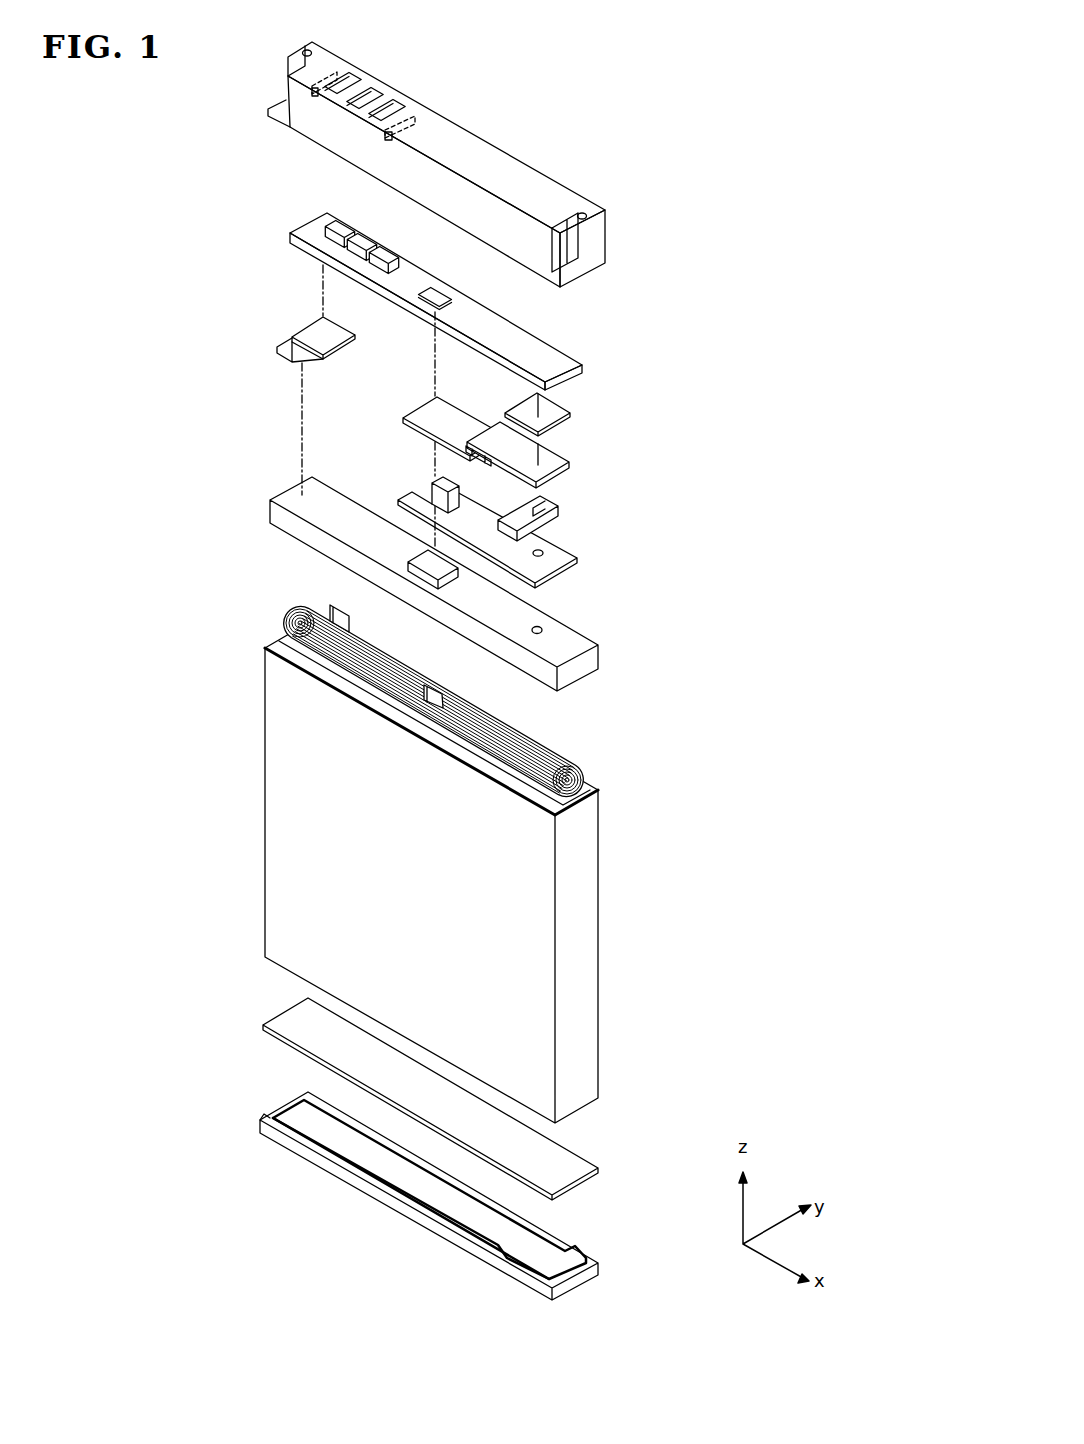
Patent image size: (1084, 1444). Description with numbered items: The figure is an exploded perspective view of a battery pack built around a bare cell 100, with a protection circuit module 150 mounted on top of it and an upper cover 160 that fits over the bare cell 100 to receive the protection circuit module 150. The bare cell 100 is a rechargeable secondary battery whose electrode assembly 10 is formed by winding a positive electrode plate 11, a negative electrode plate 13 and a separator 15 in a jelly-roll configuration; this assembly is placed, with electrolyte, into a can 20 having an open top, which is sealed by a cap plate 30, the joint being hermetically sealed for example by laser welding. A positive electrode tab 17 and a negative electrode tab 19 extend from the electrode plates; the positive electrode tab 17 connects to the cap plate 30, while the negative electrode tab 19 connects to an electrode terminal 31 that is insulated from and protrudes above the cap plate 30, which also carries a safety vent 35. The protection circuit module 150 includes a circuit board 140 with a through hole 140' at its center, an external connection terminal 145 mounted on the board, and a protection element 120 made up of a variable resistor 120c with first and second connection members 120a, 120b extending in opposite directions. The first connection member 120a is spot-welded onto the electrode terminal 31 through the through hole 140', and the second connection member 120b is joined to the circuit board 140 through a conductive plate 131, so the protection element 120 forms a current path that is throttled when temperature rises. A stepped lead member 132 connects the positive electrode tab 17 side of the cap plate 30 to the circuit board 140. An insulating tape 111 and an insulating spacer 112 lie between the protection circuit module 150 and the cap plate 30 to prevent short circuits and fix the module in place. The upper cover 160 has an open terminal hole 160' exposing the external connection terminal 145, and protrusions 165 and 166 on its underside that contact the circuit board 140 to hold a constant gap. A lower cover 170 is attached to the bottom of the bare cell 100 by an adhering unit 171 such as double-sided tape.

The bare cell 100 is at (493, 652).
The upper cover 160 is at (436, 145).
The open terminal hole 160' is at (377, 77).
The protrusion 165 is at (335, 73).
The protrusion 166 is at (420, 124).
The protection circuit module 150 is at (493, 338).
The circuit board 140 is at (462, 284).
The through hole 140' is at (477, 294).
The external connection terminal 145 is at (335, 232).
The conductive plate 131 is at (562, 412).
The lead member 132 is at (312, 333).
The protection element 120 is at (515, 427).
The first connection member 120a is at (423, 410).
The second connection member 120b is at (548, 467).
The variable resistor 120c is at (477, 447).
The insulating spacer 112 is at (555, 508).
The insulating tape 111 is at (575, 557).
The cap plate 30 is at (477, 584).
The safety vent 35 is at (543, 628).
The electrode terminal 31 is at (430, 567).
The can 20 is at (588, 855).
The electrode assembly 10 is at (498, 704).
The negative electrode plate 13 is at (588, 758).
The separator 15 is at (585, 770).
The positive electrode plate 11 is at (588, 787).
The positive electrode tab 17 is at (332, 628).
The negative electrode tab 19 is at (432, 697).
The adhering unit 171 is at (575, 1162).
The lower cover 170 is at (573, 1245).